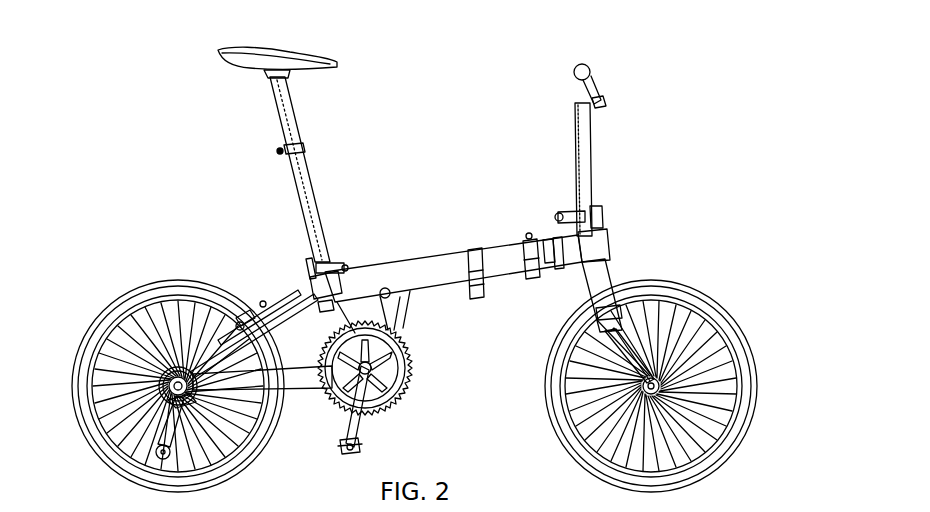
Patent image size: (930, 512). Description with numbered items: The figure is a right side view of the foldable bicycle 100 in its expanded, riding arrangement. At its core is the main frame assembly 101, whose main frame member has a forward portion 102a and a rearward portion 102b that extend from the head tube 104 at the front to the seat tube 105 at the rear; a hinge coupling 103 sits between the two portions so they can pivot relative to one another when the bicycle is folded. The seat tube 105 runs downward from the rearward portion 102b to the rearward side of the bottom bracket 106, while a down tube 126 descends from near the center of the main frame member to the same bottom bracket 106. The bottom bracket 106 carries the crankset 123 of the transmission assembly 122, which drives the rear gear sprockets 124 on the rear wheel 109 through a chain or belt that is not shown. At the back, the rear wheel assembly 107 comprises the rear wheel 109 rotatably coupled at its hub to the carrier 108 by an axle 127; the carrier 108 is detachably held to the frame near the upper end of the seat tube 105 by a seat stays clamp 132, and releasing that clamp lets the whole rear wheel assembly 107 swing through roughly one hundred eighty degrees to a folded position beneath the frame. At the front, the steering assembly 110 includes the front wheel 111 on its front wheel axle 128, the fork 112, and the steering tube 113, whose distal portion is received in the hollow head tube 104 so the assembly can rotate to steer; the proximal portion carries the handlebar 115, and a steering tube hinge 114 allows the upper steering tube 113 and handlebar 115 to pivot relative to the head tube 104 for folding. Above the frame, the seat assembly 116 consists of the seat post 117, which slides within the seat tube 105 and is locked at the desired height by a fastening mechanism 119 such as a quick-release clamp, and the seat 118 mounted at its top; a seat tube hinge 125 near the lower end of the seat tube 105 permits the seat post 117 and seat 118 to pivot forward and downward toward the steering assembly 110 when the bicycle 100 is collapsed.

The bicycle 100 is at (148, 110).
The main frame assembly 101 is at (441, 130).
The forward portion 102a is at (547, 235).
The rearward portion 102b is at (418, 258).
The hinge coupling 103 is at (528, 234).
The head tube 104 is at (552, 236).
The seat tube 105 is at (345, 293).
The bottom bracket 106 is at (396, 386).
The rear wheel assembly 107 is at (190, 226).
The carrier 108 is at (257, 328).
The rear wheel 109 is at (112, 473).
The steering assembly 110 is at (700, 198).
The front wheel 111 is at (700, 294).
The fork 112 is at (620, 272).
The steering tube 113 is at (592, 136).
The steering tube hinge 114 is at (594, 214).
The handlebar 115 is at (596, 93).
The seat assembly 116 is at (360, 171).
The seat post 117 is at (272, 108).
The seat 118 is at (338, 63).
The fastening mechanism 119 is at (277, 151).
The transmission assembly 122 is at (420, 437).
The crankset 123 is at (416, 345).
The rear gear sprockets 124 is at (152, 356).
The seat tube hinge 125 is at (312, 268).
The down tube 126 is at (416, 300).
The axle 127 is at (178, 372).
The front wheel axle 128 is at (656, 378).
The seat stays clamp 132 is at (300, 291).